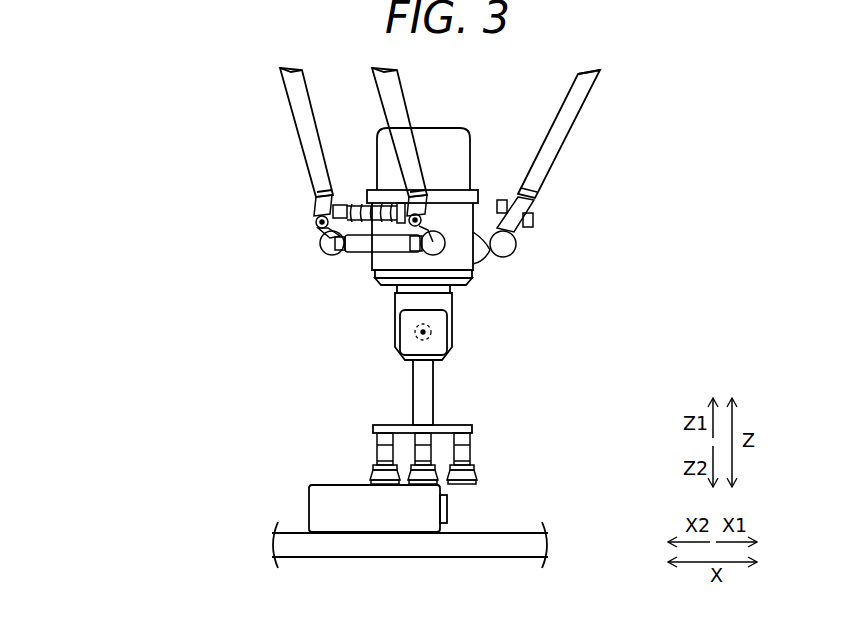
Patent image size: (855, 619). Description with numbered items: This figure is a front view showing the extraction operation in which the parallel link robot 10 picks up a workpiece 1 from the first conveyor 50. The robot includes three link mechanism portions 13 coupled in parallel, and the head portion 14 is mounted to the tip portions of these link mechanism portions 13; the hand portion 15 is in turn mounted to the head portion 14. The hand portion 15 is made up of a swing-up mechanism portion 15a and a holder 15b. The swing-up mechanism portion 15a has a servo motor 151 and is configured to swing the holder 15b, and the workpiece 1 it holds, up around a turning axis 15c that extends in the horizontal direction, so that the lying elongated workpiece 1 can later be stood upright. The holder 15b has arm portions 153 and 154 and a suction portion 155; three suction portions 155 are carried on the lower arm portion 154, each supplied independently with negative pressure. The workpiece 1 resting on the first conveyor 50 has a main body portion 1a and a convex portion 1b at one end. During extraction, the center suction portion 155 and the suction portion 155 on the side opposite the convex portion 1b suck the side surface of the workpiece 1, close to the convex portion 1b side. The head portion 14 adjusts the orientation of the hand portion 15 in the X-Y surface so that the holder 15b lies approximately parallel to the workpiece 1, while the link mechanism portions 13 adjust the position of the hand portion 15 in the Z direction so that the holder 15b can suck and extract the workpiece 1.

The workpiece 1 is at (389, 464).
The main body portion 1a is at (325, 484).
The convex portion 1b is at (447, 506).
The parallel link robot 10 is at (445, 276).
The link mechanism portion 13 is at (297, 157).
The head portion 14 is at (465, 128).
The hand portion 15 is at (471, 381).
The swing-up mechanism portion 15a is at (435, 319).
The holder 15b is at (471, 422).
The turning axis 15c is at (414, 331).
The first conveyor 50 is at (507, 532).
The servo motor 151 is at (440, 337).
The arm portion 153 is at (430, 405).
The arm portion 154 is at (473, 428).
The suction portion 155 is at (414, 453).